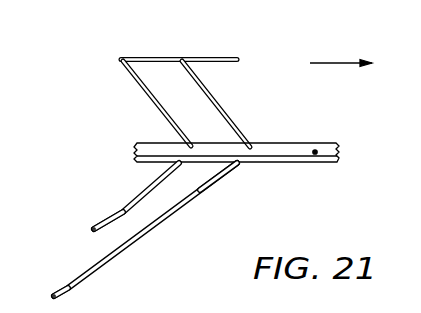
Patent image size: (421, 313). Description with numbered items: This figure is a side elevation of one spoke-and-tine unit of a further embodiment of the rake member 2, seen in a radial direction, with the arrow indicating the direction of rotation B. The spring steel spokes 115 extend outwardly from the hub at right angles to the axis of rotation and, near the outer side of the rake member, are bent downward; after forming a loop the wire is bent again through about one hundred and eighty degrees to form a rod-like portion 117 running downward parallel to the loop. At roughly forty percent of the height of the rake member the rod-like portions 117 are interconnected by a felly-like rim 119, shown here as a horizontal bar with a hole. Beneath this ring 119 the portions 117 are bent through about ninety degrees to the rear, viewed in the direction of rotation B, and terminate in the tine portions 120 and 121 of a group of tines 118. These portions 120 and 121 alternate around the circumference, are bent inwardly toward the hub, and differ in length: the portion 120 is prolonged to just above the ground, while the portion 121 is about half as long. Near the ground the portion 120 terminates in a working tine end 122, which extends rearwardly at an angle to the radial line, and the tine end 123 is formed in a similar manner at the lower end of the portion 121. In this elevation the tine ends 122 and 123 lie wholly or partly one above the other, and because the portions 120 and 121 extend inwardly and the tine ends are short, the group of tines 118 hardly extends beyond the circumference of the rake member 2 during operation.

The rake member 2 is at (286, 134).
The spring steel spokes 115 is at (204, 57).
The rod-like portion 117 is at (209, 105).
The group of tines 118 is at (147, 236).
The felly-like rim 119 is at (329, 144).
The tine portion 120 is at (202, 192).
The tine portion 121 is at (152, 184).
The working tine end 122 is at (72, 284).
The tine end 123 is at (101, 225).
The direction of rotation B is at (322, 64).